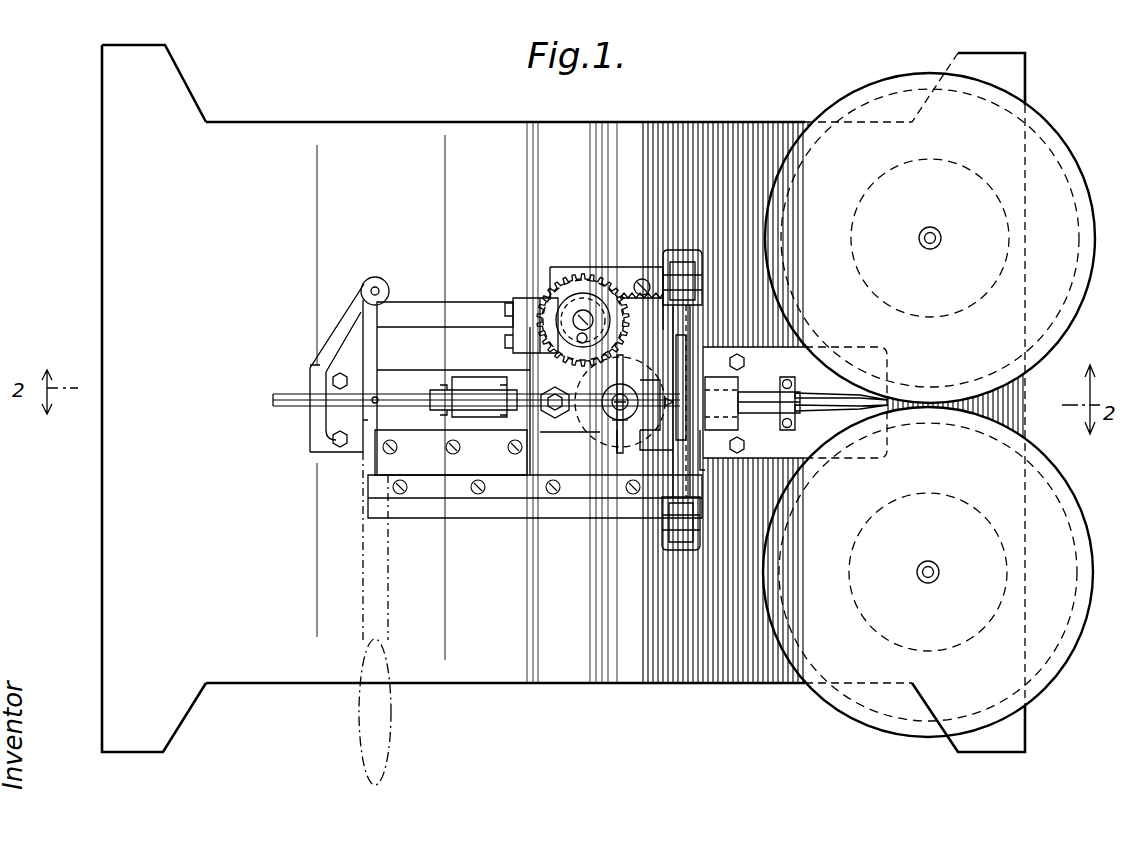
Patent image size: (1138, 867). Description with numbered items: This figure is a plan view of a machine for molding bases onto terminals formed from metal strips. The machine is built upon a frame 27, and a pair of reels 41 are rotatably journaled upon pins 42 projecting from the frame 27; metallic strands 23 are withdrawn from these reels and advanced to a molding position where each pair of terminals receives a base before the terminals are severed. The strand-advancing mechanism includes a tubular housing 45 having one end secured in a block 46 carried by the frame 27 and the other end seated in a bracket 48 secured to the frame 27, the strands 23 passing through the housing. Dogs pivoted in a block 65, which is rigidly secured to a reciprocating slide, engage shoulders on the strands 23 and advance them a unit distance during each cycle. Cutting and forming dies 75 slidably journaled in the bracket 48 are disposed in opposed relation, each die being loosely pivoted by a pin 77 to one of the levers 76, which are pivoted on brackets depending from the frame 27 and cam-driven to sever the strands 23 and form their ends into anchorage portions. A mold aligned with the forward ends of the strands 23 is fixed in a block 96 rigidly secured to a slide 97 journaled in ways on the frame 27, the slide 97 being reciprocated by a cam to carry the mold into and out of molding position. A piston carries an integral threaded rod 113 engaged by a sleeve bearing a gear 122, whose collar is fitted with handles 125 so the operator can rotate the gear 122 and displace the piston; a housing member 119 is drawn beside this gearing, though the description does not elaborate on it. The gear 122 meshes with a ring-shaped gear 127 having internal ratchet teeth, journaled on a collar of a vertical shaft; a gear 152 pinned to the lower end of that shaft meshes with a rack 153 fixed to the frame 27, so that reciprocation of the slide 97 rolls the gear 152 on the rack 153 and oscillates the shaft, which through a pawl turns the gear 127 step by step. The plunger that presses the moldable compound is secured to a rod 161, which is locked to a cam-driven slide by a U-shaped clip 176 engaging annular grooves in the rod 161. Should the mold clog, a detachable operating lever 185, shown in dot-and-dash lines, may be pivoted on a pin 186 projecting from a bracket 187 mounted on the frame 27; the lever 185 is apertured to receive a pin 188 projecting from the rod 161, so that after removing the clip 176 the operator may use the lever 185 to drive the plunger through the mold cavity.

The metallic strands 23 is at (843, 396).
The frame 27 is at (563, 398).
The reels 41 is at (1036, 480).
The pins 42 is at (933, 246).
The tubular housing 45 is at (760, 394).
The block 46 is at (783, 430).
The bracket 48 is at (682, 470).
The block 65 is at (733, 392).
The cutting and forming dies 75 is at (690, 396).
The levers 76 is at (680, 268).
The pins 77 is at (692, 300).
The block 96 is at (521, 494).
The slide 97 is at (585, 437).
The threaded rod 113 is at (624, 404).
The motor housing 119 is at (531, 325).
The gear 122 is at (608, 437).
The handles 125 is at (614, 430).
The gear 127 is at (570, 288).
The gear 152 is at (604, 292).
The rack 153 is at (623, 283).
The rod 161 is at (560, 435).
The U-shaped clip 176 is at (472, 398).
The detachable operating lever 185 is at (357, 742).
The pin 186 is at (378, 289).
The bracket 187 is at (343, 325).
The pin 188 is at (378, 398).